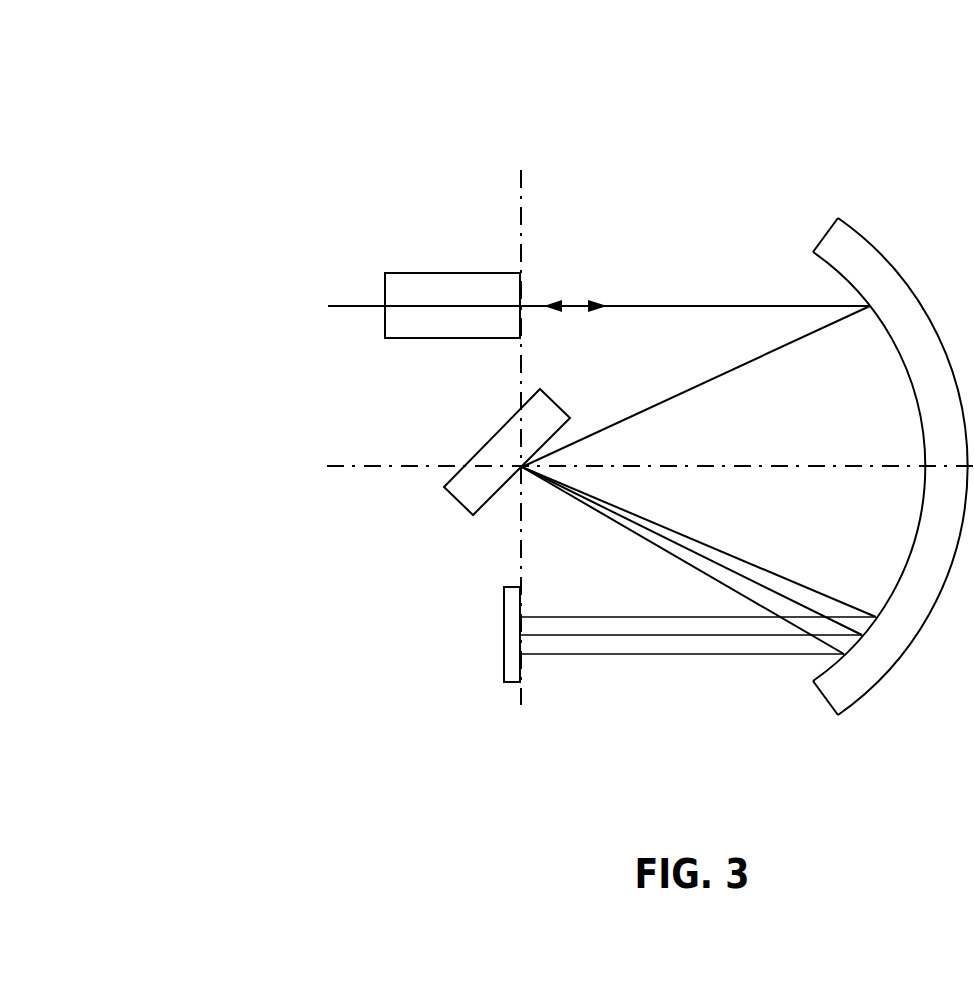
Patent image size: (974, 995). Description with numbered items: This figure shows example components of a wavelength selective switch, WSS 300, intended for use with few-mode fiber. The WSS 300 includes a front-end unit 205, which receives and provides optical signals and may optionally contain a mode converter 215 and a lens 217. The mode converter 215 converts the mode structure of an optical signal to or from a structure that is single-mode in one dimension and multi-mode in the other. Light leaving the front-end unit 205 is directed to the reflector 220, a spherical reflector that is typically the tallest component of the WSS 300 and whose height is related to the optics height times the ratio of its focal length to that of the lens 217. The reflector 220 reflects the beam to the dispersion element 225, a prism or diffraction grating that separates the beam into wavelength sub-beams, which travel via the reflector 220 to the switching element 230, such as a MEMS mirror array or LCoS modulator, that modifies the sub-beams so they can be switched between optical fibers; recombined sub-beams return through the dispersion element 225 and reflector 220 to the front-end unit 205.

The wavelength selective switch 300 is at (552, 371).
The front-end unit 205 is at (386, 273).
The mode converter 215 is at (452, 305).
The lens 217 is at (452, 305).
The reflector 220 is at (838, 218).
The dispersion element 225 is at (485, 443).
The switching element 230 is at (455, 634).